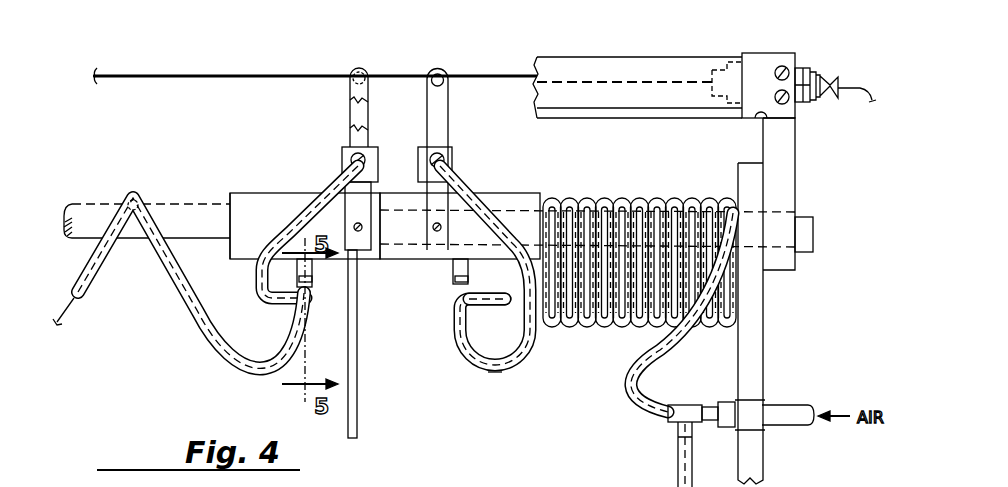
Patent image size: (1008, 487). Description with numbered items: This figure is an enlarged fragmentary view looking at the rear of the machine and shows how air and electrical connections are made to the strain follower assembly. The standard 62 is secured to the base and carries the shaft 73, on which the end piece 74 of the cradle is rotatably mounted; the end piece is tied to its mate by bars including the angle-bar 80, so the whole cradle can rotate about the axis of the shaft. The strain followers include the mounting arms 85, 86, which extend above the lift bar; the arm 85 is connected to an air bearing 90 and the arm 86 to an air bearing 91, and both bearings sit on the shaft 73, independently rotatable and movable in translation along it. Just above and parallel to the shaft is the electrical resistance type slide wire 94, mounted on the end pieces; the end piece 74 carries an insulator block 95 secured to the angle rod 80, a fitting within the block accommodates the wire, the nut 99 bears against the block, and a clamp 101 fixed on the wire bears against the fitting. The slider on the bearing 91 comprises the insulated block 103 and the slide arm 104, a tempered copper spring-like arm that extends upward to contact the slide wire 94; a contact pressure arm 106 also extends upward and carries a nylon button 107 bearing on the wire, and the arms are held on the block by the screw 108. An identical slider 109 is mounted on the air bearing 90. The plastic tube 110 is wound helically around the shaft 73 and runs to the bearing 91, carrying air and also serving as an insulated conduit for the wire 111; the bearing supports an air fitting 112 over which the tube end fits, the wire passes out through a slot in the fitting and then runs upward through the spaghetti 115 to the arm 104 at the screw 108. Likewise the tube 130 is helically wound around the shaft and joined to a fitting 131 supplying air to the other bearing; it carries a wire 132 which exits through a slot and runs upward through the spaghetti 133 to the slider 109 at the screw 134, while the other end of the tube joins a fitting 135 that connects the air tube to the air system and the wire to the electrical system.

The standard 62 is at (766, 342).
The shaft 73 is at (90, 213).
The end piece 74 is at (795, 268).
The angle-bar 80 is at (628, 68).
The mounting arm 85 is at (440, 200).
The mounting arm 86 is at (333, 178).
The air bearing 90 is at (532, 198).
The air bearing 91 is at (237, 197).
The slide wire 94 is at (207, 74).
The insulator block 95 is at (757, 55).
The nut 99 is at (808, 103).
The clamp 101 is at (836, 98).
The insulated block 103 is at (345, 160).
The slide arm 104 is at (365, 121).
The contact pressure arm 106 is at (367, 96).
The nylon button 107 is at (349, 72).
The screw 108 is at (373, 158).
The slider 109 is at (450, 121).
The plastic tube 110 is at (192, 318).
The wire 111 is at (62, 320).
The air fitting 112 is at (310, 282).
The spaghetti 115 is at (315, 188).
The tube 130 is at (526, 356).
The fitting 131 is at (455, 285).
The wire 132 is at (493, 372).
The spaghetti 133 is at (495, 360).
The screw 134 is at (455, 160).
The fitting 135 is at (688, 408).